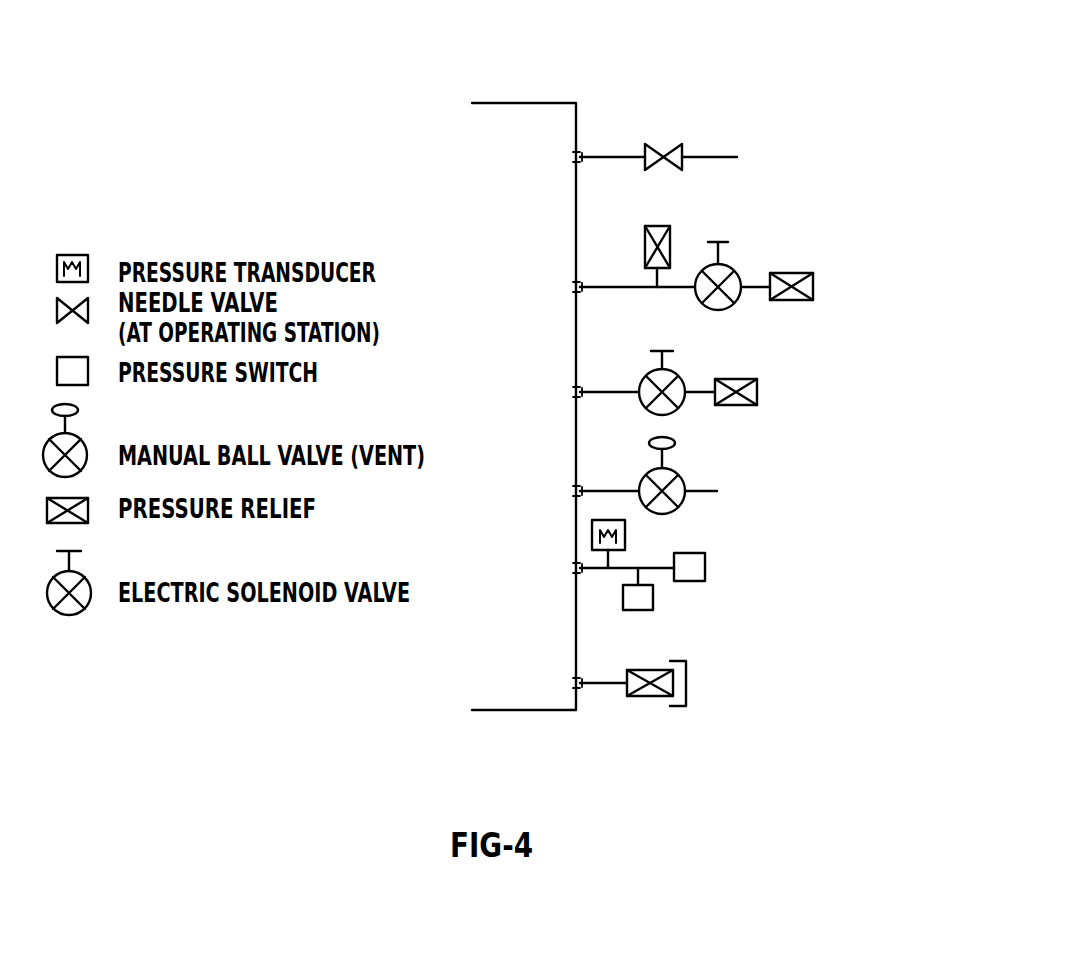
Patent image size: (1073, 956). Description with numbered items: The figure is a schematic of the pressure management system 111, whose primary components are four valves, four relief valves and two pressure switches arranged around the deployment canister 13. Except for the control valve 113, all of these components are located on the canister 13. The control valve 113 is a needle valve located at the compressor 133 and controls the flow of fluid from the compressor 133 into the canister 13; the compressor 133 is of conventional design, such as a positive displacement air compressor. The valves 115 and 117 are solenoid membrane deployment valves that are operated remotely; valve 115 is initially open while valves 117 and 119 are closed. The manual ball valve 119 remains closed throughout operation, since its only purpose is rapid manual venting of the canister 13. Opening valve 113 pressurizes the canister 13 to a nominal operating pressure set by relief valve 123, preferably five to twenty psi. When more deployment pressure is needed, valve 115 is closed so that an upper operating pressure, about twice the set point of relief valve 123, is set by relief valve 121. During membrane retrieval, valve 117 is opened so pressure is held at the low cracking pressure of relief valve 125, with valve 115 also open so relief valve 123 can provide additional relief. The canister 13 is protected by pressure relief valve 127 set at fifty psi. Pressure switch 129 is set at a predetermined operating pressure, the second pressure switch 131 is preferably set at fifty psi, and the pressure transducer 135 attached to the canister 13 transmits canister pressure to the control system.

The canister 13 is at (550, 90).
The pressure management system 111 is at (862, 480).
The control valve 113 is at (676, 167).
The membrane deployment valve 115 is at (735, 305).
The membrane deployment valve 117 is at (680, 408).
The valve 119 is at (688, 478).
The relief valve 121 is at (650, 226).
The relief valve 123 is at (813, 287).
The relief valve 125 is at (757, 392).
The pressure relief valve 127 is at (645, 696).
The pressure switch 129 is at (705, 570).
The second pressure switch 131 is at (652, 610).
The compressor 133 is at (898, 157).
The pressure transducer 135 is at (625, 540).